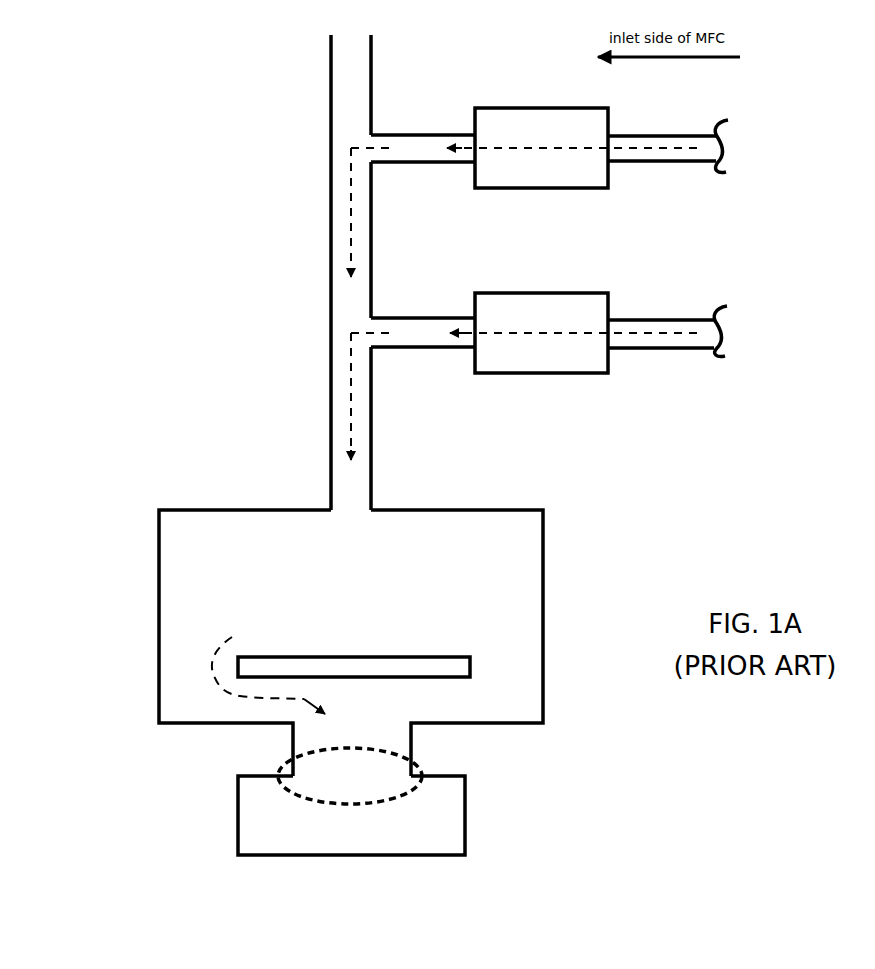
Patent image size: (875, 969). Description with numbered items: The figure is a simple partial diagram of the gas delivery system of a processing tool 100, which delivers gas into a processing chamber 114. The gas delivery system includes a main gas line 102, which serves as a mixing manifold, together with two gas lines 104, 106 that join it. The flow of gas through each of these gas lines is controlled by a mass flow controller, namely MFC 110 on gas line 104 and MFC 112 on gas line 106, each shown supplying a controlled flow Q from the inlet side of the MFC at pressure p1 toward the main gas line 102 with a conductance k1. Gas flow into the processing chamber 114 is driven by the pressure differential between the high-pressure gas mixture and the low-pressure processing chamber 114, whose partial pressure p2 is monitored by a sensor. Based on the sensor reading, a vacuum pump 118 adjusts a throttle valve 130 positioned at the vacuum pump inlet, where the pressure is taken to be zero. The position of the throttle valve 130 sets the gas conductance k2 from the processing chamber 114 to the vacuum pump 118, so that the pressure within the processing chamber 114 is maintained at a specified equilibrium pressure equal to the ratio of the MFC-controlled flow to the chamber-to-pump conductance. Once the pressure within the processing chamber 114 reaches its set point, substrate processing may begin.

The processing tool 100 is at (168, 52).
The main gas line 102 is at (331, 218).
The gas line 104 is at (428, 135).
The gas line 106 is at (432, 318).
The mass flow controller 110 is at (540, 108).
The mass flow controller 112 is at (540, 293).
The processing chamber 114 is at (467, 510).
The vacuum pump 118 is at (351, 815).
The throttle valve 130 is at (416, 771).